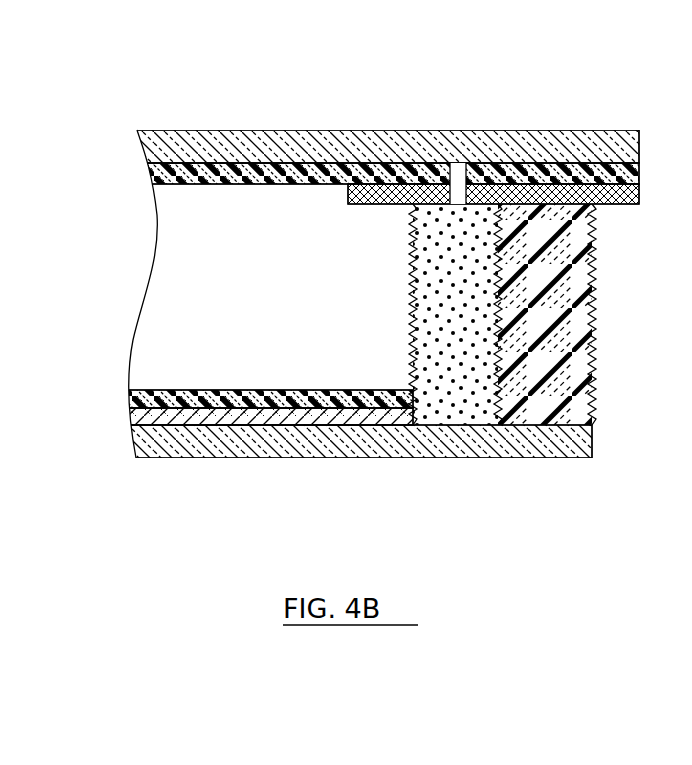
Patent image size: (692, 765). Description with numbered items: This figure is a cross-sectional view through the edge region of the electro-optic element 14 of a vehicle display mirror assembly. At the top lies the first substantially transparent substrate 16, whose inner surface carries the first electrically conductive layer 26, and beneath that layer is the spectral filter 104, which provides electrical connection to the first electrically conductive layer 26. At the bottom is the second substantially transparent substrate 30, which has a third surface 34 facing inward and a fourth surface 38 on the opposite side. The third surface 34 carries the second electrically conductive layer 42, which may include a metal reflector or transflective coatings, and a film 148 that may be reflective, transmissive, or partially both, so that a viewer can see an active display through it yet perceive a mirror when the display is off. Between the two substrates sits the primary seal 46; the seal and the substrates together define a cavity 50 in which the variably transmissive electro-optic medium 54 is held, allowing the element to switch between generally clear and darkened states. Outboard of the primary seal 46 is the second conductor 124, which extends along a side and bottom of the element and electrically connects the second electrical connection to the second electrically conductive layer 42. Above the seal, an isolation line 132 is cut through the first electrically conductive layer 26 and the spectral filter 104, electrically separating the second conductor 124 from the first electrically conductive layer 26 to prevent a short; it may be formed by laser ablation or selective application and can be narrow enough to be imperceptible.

The electro-optic element 14 is at (346, 69).
The first substantially transparent substrate 16 is at (603, 140).
The first electrically conductive layer 26 is at (638, 177).
The spectral filter 104 is at (627, 205).
The isolation line 132 is at (457, 158).
The primary seal 46 is at (461, 400).
The second conductor 124 is at (575, 351).
The cavity 50 is at (196, 227).
The electro-optic medium 54 is at (195, 306).
The second electrically conductive layer 42 is at (133, 394).
The film 148 is at (155, 416).
The second substantially transparent substrate 30 is at (207, 440).
The third surface 34 is at (289, 425).
The fourth surface 38 is at (337, 458).